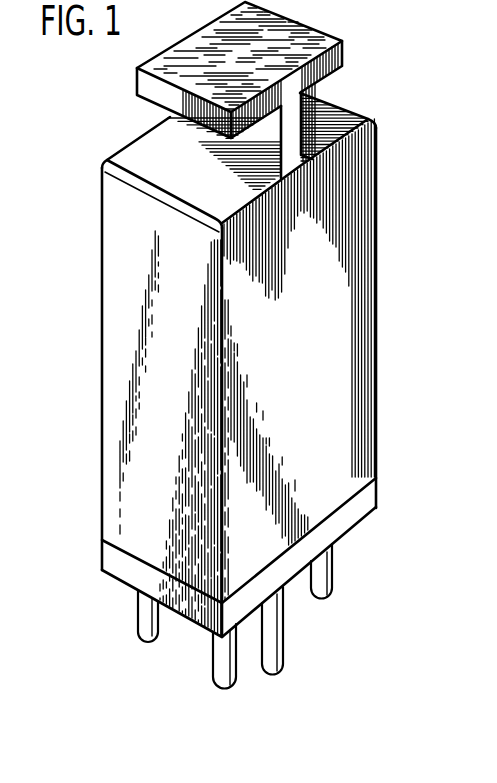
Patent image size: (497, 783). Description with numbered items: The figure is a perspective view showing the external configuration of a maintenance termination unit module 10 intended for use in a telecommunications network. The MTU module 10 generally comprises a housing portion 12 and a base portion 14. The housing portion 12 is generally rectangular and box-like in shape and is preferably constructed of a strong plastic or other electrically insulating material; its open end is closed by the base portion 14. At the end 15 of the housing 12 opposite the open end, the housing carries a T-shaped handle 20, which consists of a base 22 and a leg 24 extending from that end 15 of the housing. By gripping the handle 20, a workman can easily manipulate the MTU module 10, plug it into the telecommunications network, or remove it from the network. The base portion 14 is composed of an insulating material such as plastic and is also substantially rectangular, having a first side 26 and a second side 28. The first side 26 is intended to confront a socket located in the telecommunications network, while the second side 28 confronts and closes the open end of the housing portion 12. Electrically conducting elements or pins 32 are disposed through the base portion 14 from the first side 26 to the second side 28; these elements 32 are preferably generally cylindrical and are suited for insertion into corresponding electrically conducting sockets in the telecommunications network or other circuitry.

The maintenance termination unit module 10 is at (243, 373).
The housing portion 12 is at (130, 277).
The base portion 14 is at (231, 557).
The end of the housing 15 is at (172, 163).
The T-shaped handle 20 is at (287, 90).
The base of the handle 22 is at (239, 70).
The leg of the handle 24 is at (292, 119).
The first side of the base portion 26 is at (364, 518).
The second side of the base portion 28 is at (376, 462).
The electrically conducting element or pin 32 is at (145, 622).